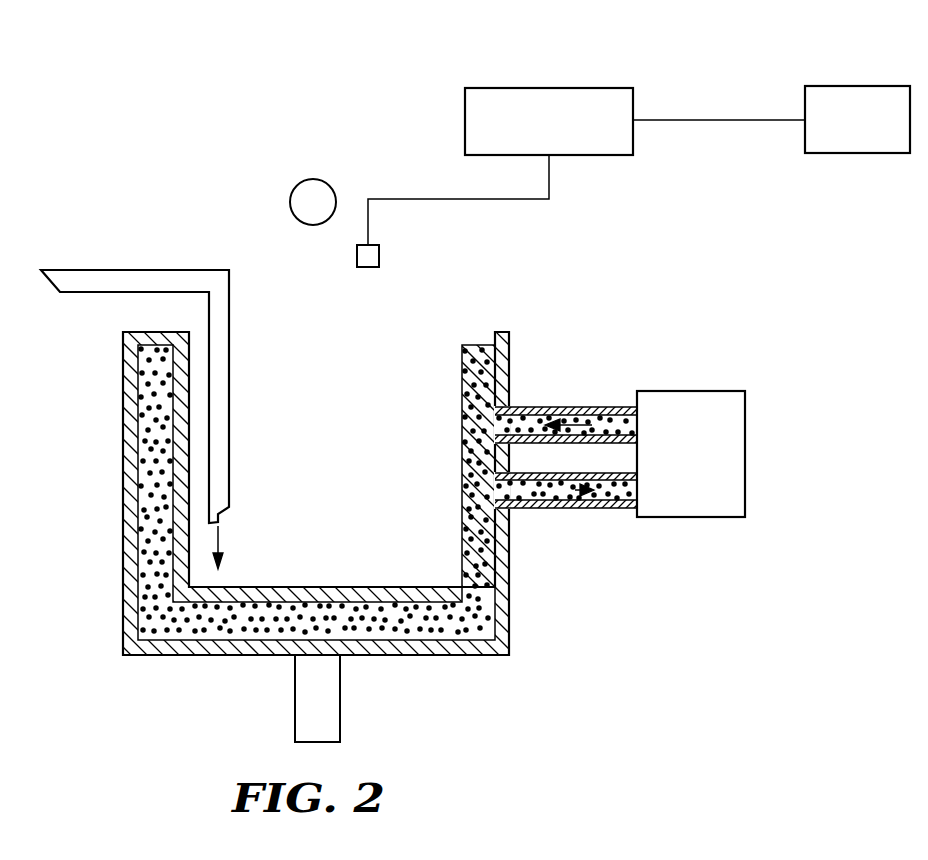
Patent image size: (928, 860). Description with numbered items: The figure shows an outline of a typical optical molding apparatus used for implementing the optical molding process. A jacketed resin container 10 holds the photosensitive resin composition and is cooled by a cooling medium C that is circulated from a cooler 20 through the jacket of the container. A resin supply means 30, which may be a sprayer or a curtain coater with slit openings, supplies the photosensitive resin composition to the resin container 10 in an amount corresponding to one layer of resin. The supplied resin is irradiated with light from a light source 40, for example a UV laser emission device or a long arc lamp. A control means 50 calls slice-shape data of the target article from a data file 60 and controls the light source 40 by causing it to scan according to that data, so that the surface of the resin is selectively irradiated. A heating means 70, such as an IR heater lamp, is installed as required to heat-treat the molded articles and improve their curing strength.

The resin container 10 is at (509, 578).
The cooler 20 is at (692, 391).
The resin supply means 30 is at (107, 270).
The light source 40 is at (380, 257).
The control means 50 is at (535, 88).
The data file 60 is at (835, 86).
The heating means 70 is at (313, 179).
The cooling medium C is at (483, 360).